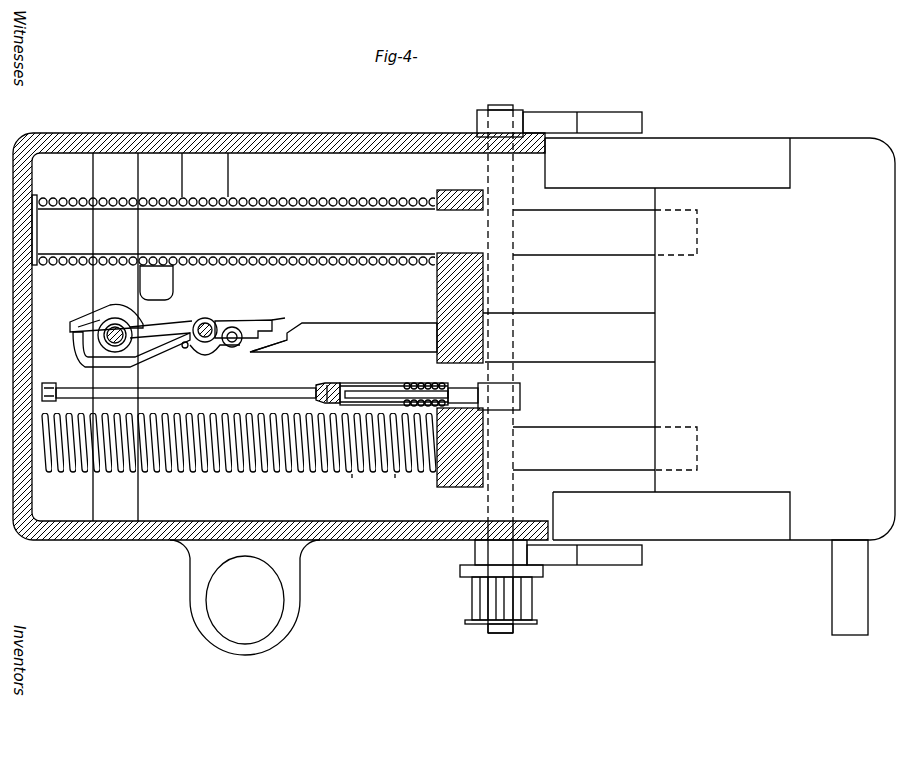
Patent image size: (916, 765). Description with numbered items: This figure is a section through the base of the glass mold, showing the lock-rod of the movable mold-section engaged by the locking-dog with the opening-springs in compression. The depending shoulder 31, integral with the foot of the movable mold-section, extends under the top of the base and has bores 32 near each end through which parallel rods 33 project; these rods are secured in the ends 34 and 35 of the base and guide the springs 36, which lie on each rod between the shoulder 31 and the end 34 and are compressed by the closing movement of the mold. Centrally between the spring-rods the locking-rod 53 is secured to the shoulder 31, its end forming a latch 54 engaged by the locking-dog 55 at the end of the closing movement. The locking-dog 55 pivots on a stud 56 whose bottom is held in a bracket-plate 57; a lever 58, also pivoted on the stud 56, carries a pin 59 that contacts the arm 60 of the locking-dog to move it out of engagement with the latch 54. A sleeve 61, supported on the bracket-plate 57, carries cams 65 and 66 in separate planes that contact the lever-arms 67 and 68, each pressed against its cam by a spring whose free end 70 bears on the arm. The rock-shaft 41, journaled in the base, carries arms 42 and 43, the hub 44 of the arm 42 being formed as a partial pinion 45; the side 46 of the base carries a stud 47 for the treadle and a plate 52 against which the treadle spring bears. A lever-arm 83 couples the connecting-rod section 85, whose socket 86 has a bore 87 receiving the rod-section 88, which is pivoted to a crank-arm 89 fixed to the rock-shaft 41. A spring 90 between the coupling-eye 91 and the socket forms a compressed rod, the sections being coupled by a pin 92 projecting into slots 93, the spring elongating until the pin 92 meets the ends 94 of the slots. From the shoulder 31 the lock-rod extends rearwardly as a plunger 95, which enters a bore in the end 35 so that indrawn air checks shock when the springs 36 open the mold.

The depending shoulder 31 is at (437, 291).
The bores 32 is at (457, 212).
The parallel rods 33 is at (273, 252).
The end of the base 34 is at (30, 298).
The end of the base 35 is at (668, 278).
The springs 36 is at (312, 198).
The rock-shaft 41 is at (512, 302).
The arm 42 is at (643, 556).
The arm 43 is at (644, 124).
The hub 44 is at (475, 548).
The partial pinion 45 is at (500, 600).
The side of the base 46 is at (752, 542).
The stud 47 is at (869, 605).
The plate 52 is at (282, 628).
The locking-rod 53 is at (360, 332).
The latch 54 is at (278, 353).
The locking-dog 55 is at (275, 321).
The stud 56 is at (208, 317).
The bracket-plate 57 is at (156, 282).
The lever 58 is at (226, 348).
The pin 59 is at (235, 327).
The arm of the locking-dog 60 is at (293, 297).
The sleeve 61 is at (113, 318).
The cam 65 is at (146, 300).
The cam 66 is at (85, 318).
The lever-arm 67 is at (162, 334).
The lever-arm 68 is at (145, 360).
The free end of spring 70 is at (186, 350).
The lever-arm 83 is at (42, 384).
The connecting-rod section 85 is at (291, 392).
The socket 86 is at (378, 390).
The bore 87 is at (365, 387).
The rod-section 88 is at (394, 386).
The crank-arm 89 is at (478, 396).
The spring 90 is at (425, 386).
The coupling-eye 91 is at (456, 390).
The pin 92 is at (332, 388).
The slots 93 is at (340, 389).
The ends of the slots 94 is at (352, 479).
The plunger 95 is at (569, 364).